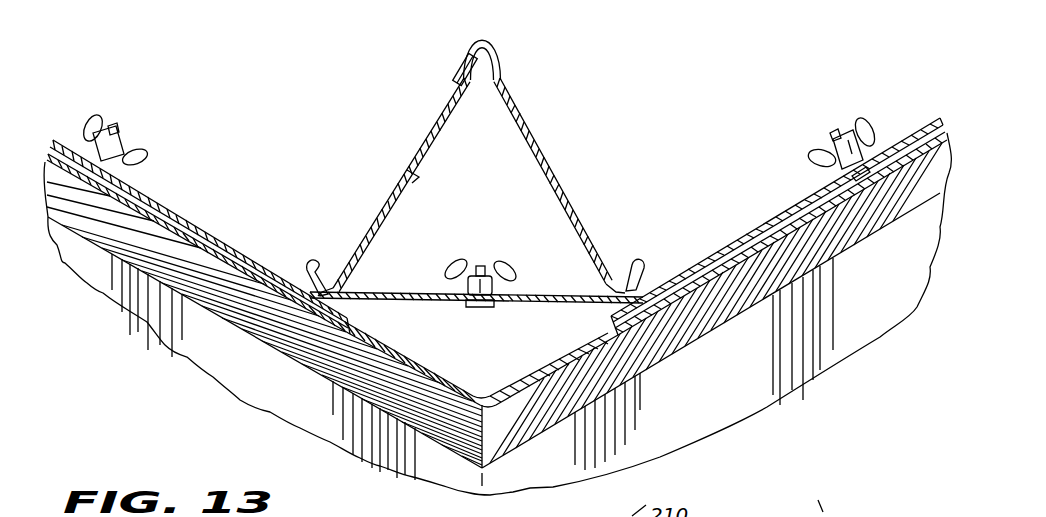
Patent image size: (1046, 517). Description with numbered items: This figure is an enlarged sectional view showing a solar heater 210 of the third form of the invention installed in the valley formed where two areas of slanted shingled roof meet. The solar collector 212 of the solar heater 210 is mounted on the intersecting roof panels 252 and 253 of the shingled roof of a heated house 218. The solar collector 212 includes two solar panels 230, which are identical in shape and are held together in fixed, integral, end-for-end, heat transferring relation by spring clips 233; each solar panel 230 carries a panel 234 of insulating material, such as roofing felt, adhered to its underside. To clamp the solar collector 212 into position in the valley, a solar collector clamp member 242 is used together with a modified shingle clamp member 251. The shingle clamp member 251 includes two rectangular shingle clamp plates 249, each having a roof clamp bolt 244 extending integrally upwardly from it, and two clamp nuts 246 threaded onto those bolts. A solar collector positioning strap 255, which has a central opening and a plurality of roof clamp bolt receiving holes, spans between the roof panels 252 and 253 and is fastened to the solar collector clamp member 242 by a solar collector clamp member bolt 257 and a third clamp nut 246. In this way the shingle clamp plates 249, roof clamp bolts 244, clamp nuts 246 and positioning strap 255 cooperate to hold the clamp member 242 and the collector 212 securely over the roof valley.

The solar heater 210 is at (518, 66).
The solar collector 212 is at (517, 102).
The heated house 218 is at (757, 393).
The solar panel 230 is at (424, 143).
The spring clip 233 is at (458, 60).
The panel of insulating material 234 is at (475, 170).
The solar collector clamp member 242 is at (636, 257).
The roof clamp bolt 244 is at (834, 131).
The clamp nut 246 is at (453, 257).
The shingle clamp plate 249 is at (860, 166).
The shingle clamp member 251 is at (557, 292).
The roof panel 252 is at (170, 233).
The roof panel 253 is at (917, 128).
The solar collector positioning strap 255 is at (232, 240).
The solar collector clamp member bolt 257 is at (484, 308).